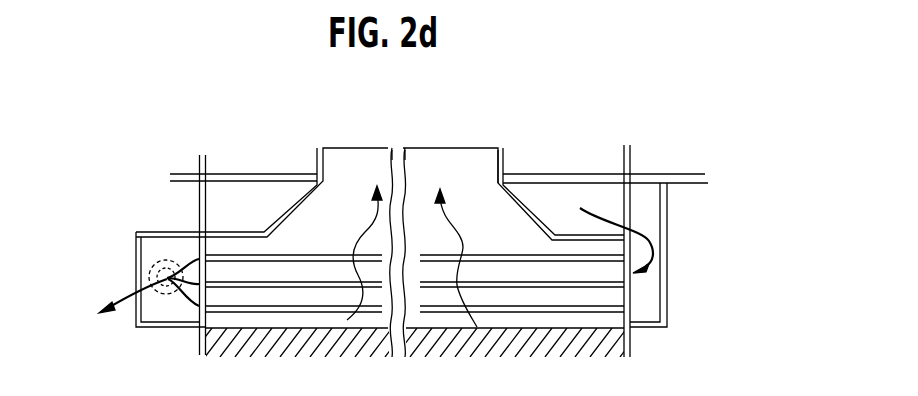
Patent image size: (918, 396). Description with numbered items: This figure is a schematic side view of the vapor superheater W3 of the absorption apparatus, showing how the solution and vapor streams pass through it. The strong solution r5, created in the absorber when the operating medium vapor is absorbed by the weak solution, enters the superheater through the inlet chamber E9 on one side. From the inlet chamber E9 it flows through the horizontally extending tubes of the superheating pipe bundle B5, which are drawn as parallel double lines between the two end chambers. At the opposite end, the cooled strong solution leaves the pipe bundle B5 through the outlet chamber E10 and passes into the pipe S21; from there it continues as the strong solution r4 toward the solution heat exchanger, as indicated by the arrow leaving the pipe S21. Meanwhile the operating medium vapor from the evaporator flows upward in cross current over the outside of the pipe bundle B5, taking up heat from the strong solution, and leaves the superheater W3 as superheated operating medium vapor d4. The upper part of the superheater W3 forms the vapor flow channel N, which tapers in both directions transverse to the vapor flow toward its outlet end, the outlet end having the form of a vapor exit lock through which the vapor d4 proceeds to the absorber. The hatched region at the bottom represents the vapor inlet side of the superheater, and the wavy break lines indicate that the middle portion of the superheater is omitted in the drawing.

The outlet chamber E10 is at (168, 248).
The inlet chamber E9 is at (647, 302).
The pipe S21 is at (150, 268).
The strong solution r4 is at (107, 302).
The strong solution r5 is at (580, 208).
The vapor superheater W3 is at (302, 272).
The pipe bundle B5 is at (504, 260).
The vapor flow channel N is at (473, 197).
The superheated operating medium vapor d4 is at (438, 206).